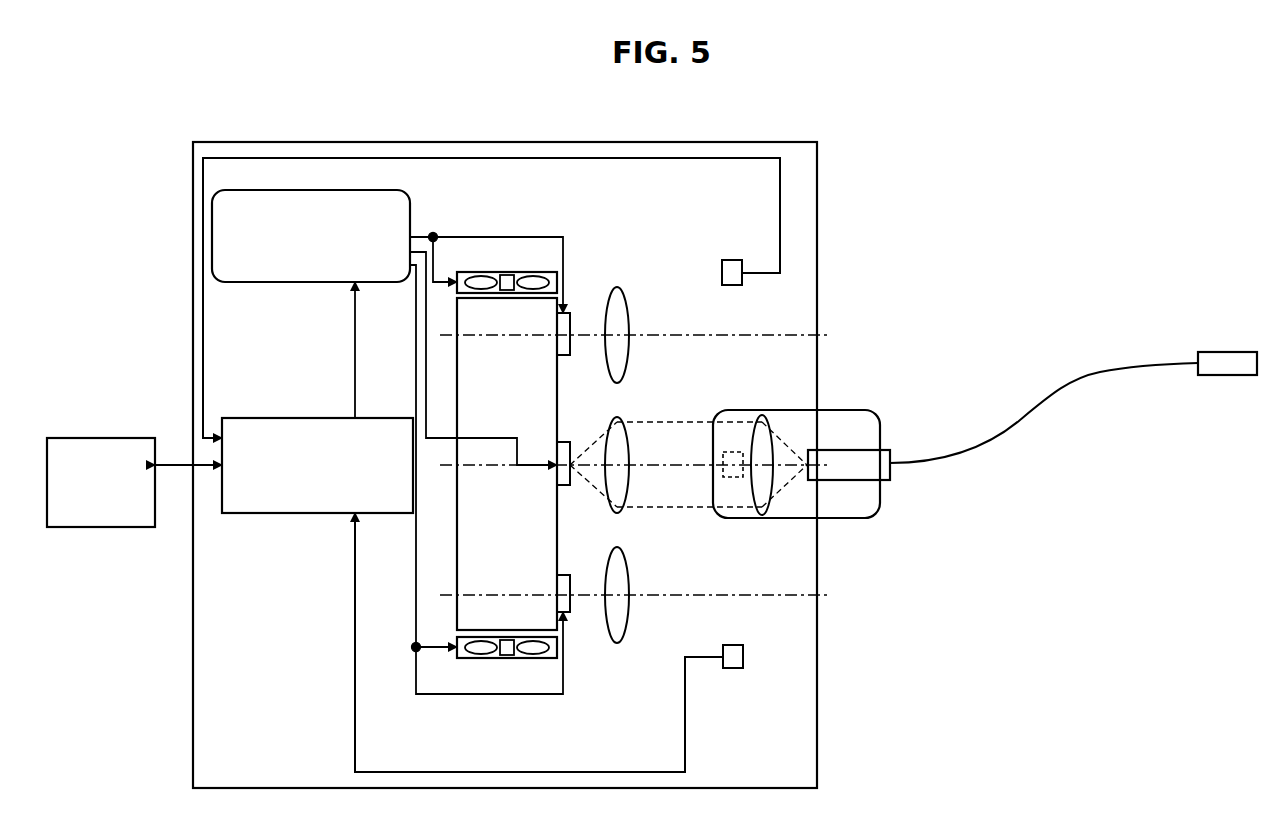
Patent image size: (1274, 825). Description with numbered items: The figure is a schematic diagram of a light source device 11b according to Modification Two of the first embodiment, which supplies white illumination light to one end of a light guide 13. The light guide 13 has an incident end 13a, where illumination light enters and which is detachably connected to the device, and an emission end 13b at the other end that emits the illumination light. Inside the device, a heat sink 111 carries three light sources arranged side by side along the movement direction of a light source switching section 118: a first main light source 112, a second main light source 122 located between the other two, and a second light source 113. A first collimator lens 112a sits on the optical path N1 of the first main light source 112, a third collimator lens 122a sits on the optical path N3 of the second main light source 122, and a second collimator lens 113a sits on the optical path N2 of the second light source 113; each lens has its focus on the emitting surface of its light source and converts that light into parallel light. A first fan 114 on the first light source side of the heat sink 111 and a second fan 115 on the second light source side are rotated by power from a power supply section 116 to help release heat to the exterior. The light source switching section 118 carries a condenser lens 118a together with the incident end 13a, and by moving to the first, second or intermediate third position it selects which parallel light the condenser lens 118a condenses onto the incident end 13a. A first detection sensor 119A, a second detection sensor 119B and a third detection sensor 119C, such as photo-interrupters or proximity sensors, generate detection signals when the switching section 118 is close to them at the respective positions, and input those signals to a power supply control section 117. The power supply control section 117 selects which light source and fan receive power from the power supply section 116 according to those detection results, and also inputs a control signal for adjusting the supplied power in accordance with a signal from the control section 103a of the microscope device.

The light source device 11b is at (786, 142).
The control section 103a is at (110, 438).
The power supply control section 117 is at (232, 418).
The power supply section 116 is at (410, 204).
The first fan 114 is at (505, 272).
The second fan 115 is at (508, 658).
The heat sink 111 is at (557, 521).
The first main light source 112 is at (570, 313).
The first collimator lens 112a is at (620, 290).
The second main light source 122 is at (570, 442).
The third collimator lens 122a is at (618, 420).
The second light source 113 is at (570, 612).
The second collimator lens 113a is at (620, 645).
The light source switching section 118 is at (851, 410).
The condenser lens 118a is at (766, 515).
The first detection sensor 119A is at (732, 260).
The second detection sensor 119B is at (735, 668).
The third detection sensor 119C is at (733, 478).
The light guide 13 is at (1070, 380).
The incident end 13a is at (890, 450).
The emission end 13b is at (1226, 352).
The optical path N1 is at (700, 333).
The optical path N2 is at (699, 597).
The optical path N3 is at (702, 465).